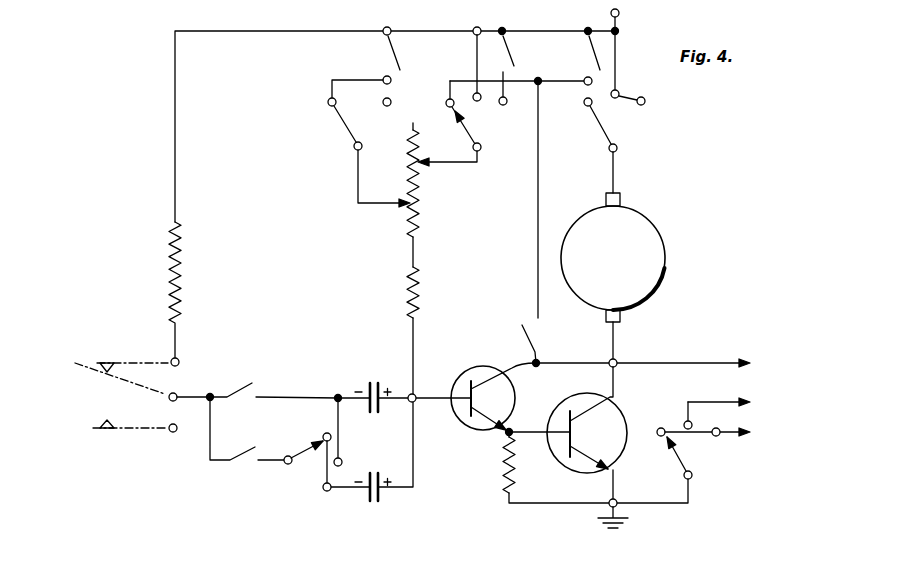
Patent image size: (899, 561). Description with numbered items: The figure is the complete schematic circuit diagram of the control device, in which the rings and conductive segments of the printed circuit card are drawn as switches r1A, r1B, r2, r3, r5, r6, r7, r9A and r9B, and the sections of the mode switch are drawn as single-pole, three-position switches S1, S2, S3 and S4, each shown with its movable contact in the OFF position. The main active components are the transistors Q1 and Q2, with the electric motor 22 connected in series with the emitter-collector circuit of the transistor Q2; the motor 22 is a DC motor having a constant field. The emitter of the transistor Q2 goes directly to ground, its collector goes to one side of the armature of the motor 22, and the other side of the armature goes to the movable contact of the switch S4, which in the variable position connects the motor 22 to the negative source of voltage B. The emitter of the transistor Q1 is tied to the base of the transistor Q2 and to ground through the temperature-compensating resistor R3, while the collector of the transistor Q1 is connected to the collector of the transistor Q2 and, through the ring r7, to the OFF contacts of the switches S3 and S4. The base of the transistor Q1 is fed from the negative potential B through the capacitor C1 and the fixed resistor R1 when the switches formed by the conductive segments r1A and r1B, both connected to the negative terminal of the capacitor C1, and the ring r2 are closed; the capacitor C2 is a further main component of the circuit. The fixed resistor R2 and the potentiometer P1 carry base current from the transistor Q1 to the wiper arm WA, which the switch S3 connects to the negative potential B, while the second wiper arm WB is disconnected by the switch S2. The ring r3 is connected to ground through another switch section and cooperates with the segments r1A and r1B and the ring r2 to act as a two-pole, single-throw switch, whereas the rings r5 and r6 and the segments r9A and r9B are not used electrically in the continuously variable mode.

The fixed resistor R1 is at (190, 290).
The fixed resistor R2 is at (428, 292).
The temperature-compensating resistor R3 is at (490, 462).
The potentiometer P1 is at (427, 180).
The capacitor C1 is at (385, 387).
The capacitor C2 is at (373, 475).
The transistor Q1 is at (514, 384).
The transistor Q2 is at (620, 418).
The electric motor 22 is at (663, 250).
The switch section S1 is at (313, 443).
The switch section S2 is at (359, 113).
The switch section S3 is at (494, 115).
The switch section S4 is at (614, 114).
The wiper arm WA is at (447, 155).
The wiper arm WB is at (384, 178).
The conductive segment r1A is at (247, 428).
The conductive segment r1B is at (166, 382).
The ring r2 is at (151, 359).
The ring r3 is at (435, 424).
The ring r5 is at (717, 452).
The ring r6 is at (674, 201).
The ring r7 is at (542, 345).
The conductive segment r9A is at (508, 66).
The conductive segment r9B is at (369, 48).
The negative source of voltage B is at (627, 20).